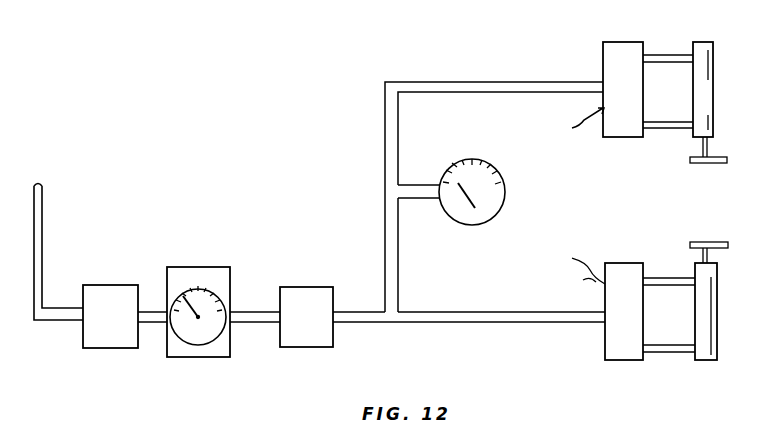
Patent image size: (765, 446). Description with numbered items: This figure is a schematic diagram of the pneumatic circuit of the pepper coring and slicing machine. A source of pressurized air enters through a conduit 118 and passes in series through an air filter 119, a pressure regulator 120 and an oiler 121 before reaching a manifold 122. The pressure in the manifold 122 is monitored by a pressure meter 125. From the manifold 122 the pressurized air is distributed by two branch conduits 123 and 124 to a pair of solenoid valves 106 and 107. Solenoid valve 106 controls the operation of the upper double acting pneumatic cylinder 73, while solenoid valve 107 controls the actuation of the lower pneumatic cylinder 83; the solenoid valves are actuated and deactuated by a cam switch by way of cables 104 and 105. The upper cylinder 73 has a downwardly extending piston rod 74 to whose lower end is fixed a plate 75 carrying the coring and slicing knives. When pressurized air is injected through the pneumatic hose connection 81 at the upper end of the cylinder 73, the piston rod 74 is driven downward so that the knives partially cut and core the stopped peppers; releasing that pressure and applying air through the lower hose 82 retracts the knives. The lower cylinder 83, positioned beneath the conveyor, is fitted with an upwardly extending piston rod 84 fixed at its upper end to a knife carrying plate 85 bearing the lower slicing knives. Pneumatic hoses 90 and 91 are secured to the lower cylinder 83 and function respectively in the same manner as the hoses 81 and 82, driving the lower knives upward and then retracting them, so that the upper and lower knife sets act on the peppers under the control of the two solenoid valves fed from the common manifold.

The conduit 118 is at (42, 203).
The air filter 119 is at (122, 292).
The pressure regulator 120 is at (210, 270).
The oiler 121 is at (322, 291).
The manifold 122 is at (399, 268).
The conduit 123 is at (440, 83).
The conduit 124 is at (478, 318).
The pressure meter 125 is at (470, 158).
The cable 104 is at (571, 127).
The cable 105 is at (571, 267).
The solenoid valve 106 is at (612, 62).
The solenoid valve 107 is at (614, 339).
The pneumatic hose connection 81 is at (666, 55).
The lower hose 82 is at (676, 96).
The double acting pneumatic cylinder 73 is at (712, 18).
The piston rod 74 is at (702, 145).
The plate 75 is at (692, 160).
The pneumatic cylinder 83 is at (700, 322).
The piston rod 84 is at (703, 256).
The knife carrying plate 85 is at (692, 242).
The pneumatic hose 90 is at (676, 352).
The pneumatic hose 91 is at (682, 283).